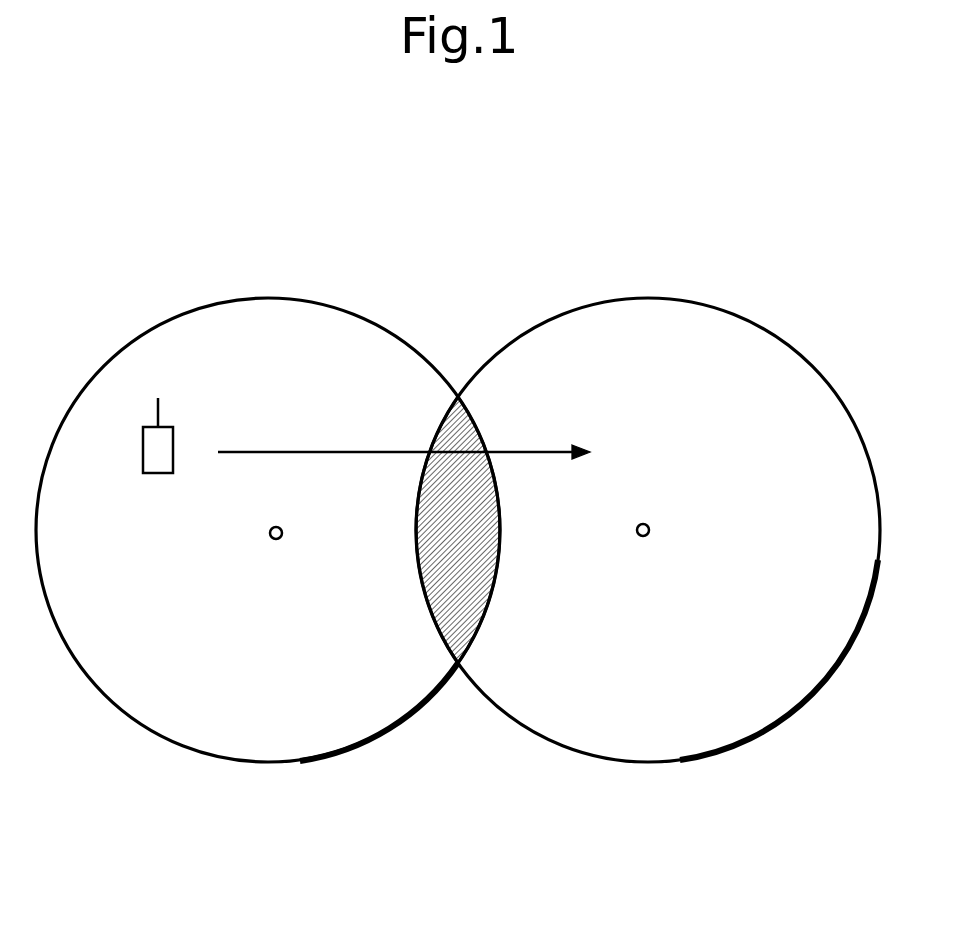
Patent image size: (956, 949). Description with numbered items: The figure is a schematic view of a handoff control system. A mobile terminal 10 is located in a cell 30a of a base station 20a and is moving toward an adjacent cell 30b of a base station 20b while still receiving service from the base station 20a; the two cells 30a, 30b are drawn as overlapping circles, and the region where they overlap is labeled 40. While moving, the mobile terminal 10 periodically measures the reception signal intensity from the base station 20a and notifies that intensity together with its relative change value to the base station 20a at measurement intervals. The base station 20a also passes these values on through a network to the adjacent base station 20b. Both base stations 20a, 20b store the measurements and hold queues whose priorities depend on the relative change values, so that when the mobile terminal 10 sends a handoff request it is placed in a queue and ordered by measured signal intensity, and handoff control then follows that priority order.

The mobile terminal 10 is at (158, 473).
The base station 20a is at (276, 540).
The base station 20b is at (643, 537).
The cell 30a is at (280, 297).
The cell 30b is at (630, 295).
The overlap area 40 is at (460, 635).